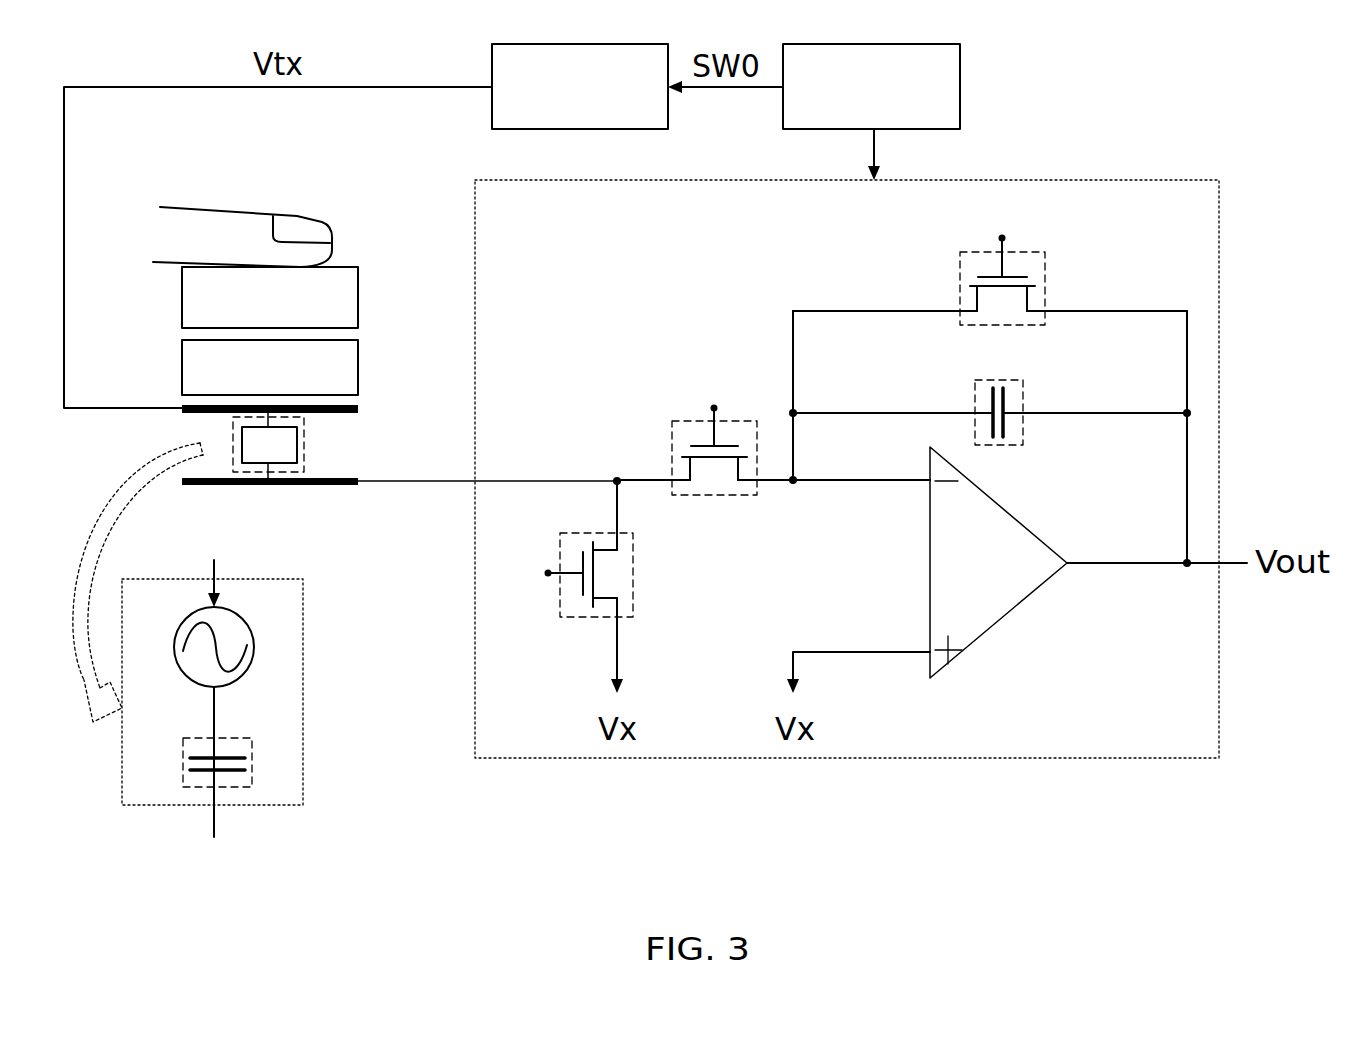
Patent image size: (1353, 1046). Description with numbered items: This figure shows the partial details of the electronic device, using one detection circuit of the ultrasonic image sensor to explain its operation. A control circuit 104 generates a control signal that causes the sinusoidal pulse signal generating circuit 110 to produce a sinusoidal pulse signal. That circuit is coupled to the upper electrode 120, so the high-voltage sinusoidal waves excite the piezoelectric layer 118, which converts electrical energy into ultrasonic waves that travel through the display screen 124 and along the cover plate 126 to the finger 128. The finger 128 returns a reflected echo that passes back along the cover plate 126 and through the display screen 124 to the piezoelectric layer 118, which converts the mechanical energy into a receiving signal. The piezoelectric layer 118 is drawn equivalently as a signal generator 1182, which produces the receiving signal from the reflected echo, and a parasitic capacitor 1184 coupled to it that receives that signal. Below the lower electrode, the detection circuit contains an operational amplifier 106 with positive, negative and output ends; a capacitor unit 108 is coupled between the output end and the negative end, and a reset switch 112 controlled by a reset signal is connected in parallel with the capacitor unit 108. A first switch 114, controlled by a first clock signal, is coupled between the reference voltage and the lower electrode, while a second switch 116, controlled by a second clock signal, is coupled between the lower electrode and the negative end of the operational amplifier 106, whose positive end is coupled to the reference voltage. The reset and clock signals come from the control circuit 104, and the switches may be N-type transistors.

The control circuit 104 is at (900, 101).
The operational amplifier 106 is at (1008, 612).
The capacitor unit 108 is at (1025, 435).
The sinusoidal pulse signal generating circuit 110 is at (605, 101).
The reset switch 112 is at (1045, 283).
The first switch 114 is at (588, 620).
The second switch 116 is at (672, 440).
The piezoelectric layer 118 is at (304, 462).
The signal generator 1182 is at (262, 612).
The parasitic capacitor 1184 is at (183, 757).
The upper electrode 120 is at (182, 405).
The display screen 124 is at (297, 386).
The cover plate 126 is at (297, 316).
The finger 128 is at (333, 225).